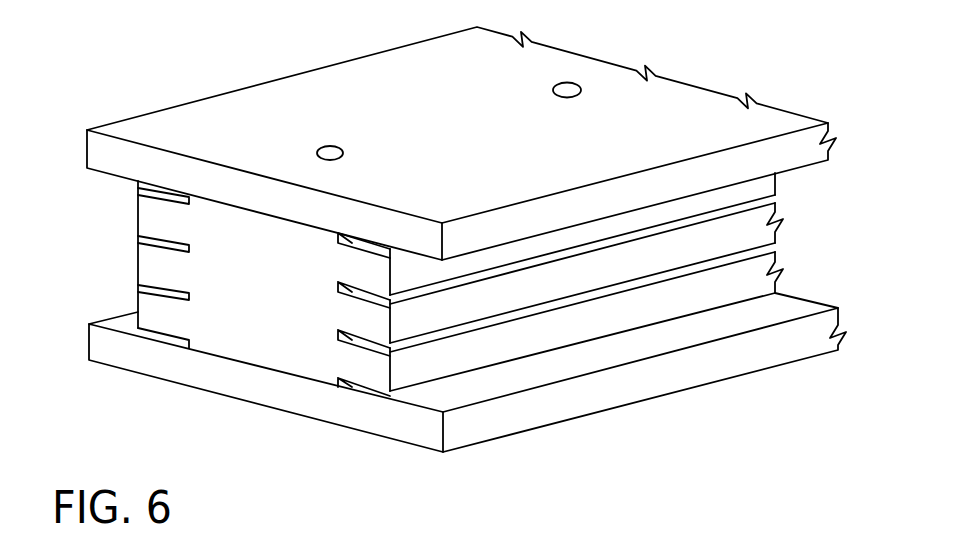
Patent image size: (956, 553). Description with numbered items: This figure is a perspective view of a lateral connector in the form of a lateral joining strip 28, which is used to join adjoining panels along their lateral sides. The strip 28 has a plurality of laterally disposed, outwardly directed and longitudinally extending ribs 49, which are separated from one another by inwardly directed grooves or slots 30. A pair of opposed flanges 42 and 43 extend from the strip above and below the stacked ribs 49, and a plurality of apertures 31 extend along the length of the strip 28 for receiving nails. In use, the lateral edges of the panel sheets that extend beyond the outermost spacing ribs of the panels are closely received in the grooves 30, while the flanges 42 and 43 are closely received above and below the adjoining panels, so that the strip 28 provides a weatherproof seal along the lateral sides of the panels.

The lateral joining strip 28 is at (206, 79).
The grooves 30 is at (132, 186).
The apertures 31 is at (343, 150).
The flange 42 is at (130, 119).
The flange 43 is at (420, 216).
The ribs 49 is at (335, 358).